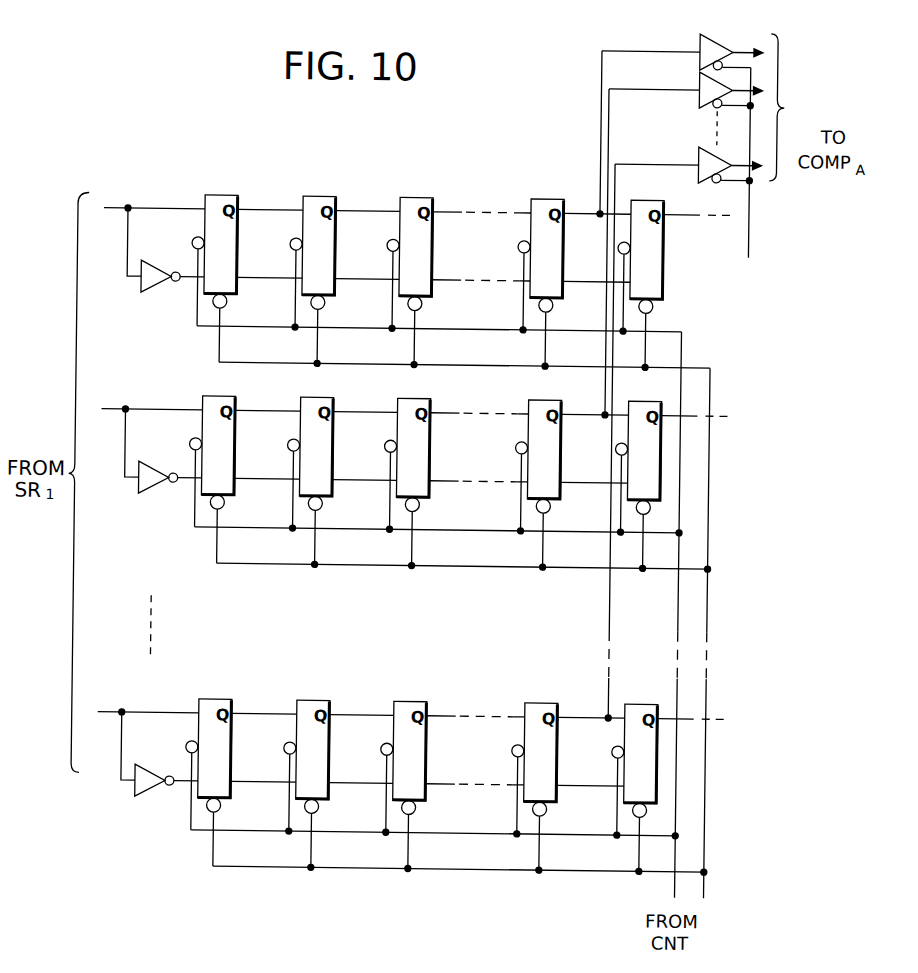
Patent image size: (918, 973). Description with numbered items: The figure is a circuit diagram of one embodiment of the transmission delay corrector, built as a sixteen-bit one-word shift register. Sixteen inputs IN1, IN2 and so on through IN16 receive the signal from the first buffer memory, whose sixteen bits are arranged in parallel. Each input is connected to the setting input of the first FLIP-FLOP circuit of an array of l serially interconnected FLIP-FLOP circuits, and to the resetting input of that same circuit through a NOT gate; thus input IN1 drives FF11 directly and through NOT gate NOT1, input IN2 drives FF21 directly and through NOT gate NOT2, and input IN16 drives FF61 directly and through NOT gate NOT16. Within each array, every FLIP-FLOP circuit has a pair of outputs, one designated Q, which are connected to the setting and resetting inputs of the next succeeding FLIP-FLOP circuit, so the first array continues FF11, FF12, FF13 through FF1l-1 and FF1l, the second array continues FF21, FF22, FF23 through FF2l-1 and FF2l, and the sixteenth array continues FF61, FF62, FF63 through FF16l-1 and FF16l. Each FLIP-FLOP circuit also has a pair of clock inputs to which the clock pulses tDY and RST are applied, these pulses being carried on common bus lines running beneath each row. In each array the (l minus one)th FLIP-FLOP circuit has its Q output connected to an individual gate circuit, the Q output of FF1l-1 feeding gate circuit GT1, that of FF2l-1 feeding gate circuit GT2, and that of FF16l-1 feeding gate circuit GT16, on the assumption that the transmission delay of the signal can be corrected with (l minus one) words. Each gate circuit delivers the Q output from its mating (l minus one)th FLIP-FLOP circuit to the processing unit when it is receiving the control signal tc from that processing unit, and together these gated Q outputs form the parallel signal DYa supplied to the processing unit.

The first flip-flop circuit of the first array FF11 is at (216, 268).
The second flip-flop circuit of the first array FF12 is at (314, 271).
The third flip-flop circuit of the first array FF13 is at (411, 272).
The (l-1)th flip-flop circuit of the first array FF1l-1 is at (547, 274).
The l-th flip-flop circuit of the first array FF1l is at (641, 275).
The first flip-flop circuit of the second array FF21 is at (213, 469).
The second flip-flop circuit of the second array FF22 is at (312, 471).
The third flip-flop circuit of the second array FF23 is at (408, 472).
The (l-1)th flip-flop circuit of the second array FF2l-1 is at (544, 474).
The l-th flip-flop circuit of the second array FF2l is at (638, 475).
The first flip-flop circuit of the sixteenth array FF61 is at (209, 770).
The second flip-flop circuit of the sixteenth array FF62 is at (307, 773).
The third flip-flop circuit of the sixteenth array FF63 is at (403, 774).
The (l-1)th flip-flop circuit of the sixteenth array FF16l-1 is at (545, 776).
The l-th flip-flop circuit of the sixteenth array FF16l is at (638, 777).
The NOT gate NOT1 is at (169, 288).
The NOT gate NOT2 is at (162, 494).
The NOT gate NOT16 is at (159, 795).
The gate circuit GT1 is at (720, 27).
The gate circuit GT2 is at (701, 79).
The gate circuit GT16 is at (708, 140).
The input IN1 is at (154, 231).
The input IN2 is at (152, 432).
The input IN16 is at (148, 735).
The control signal tc is at (760, 165).
The clock pulse tDY is at (659, 615).
The reset clock pulse RST is at (729, 635).
The parallel signal DYa is at (798, 108).